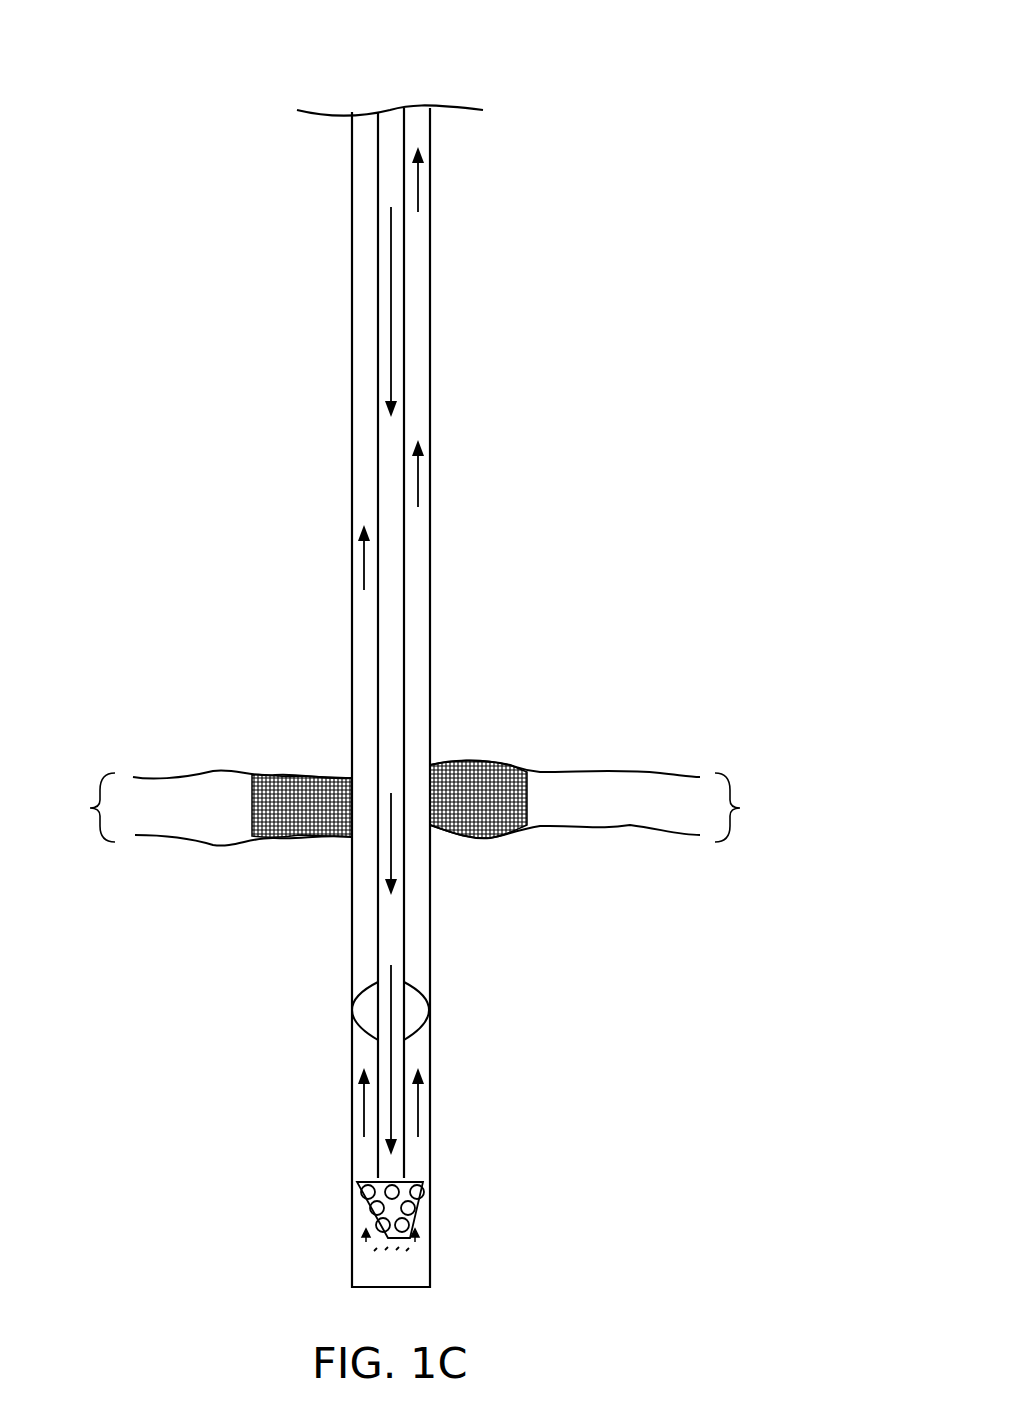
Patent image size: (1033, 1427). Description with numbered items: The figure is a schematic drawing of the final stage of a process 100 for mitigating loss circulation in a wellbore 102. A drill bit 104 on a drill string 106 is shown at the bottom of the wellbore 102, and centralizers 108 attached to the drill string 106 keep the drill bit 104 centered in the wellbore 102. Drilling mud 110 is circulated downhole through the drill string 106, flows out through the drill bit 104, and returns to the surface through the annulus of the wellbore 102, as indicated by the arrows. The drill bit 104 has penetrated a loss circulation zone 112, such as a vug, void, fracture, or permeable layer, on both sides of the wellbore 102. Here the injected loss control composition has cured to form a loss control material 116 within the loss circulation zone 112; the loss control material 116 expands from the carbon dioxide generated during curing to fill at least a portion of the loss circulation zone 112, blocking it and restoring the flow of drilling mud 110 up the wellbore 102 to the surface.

The process 100 is at (626, 83).
The wellbore 102 is at (429, 572).
The drill bit 104 is at (365, 1200).
The drill string 106 is at (404, 695).
The centralizers 108 is at (356, 995).
The drilling mud 110 is at (420, 187).
The loss circulation zone 112 is at (415, 802).
The loss control material 116 is at (308, 778).